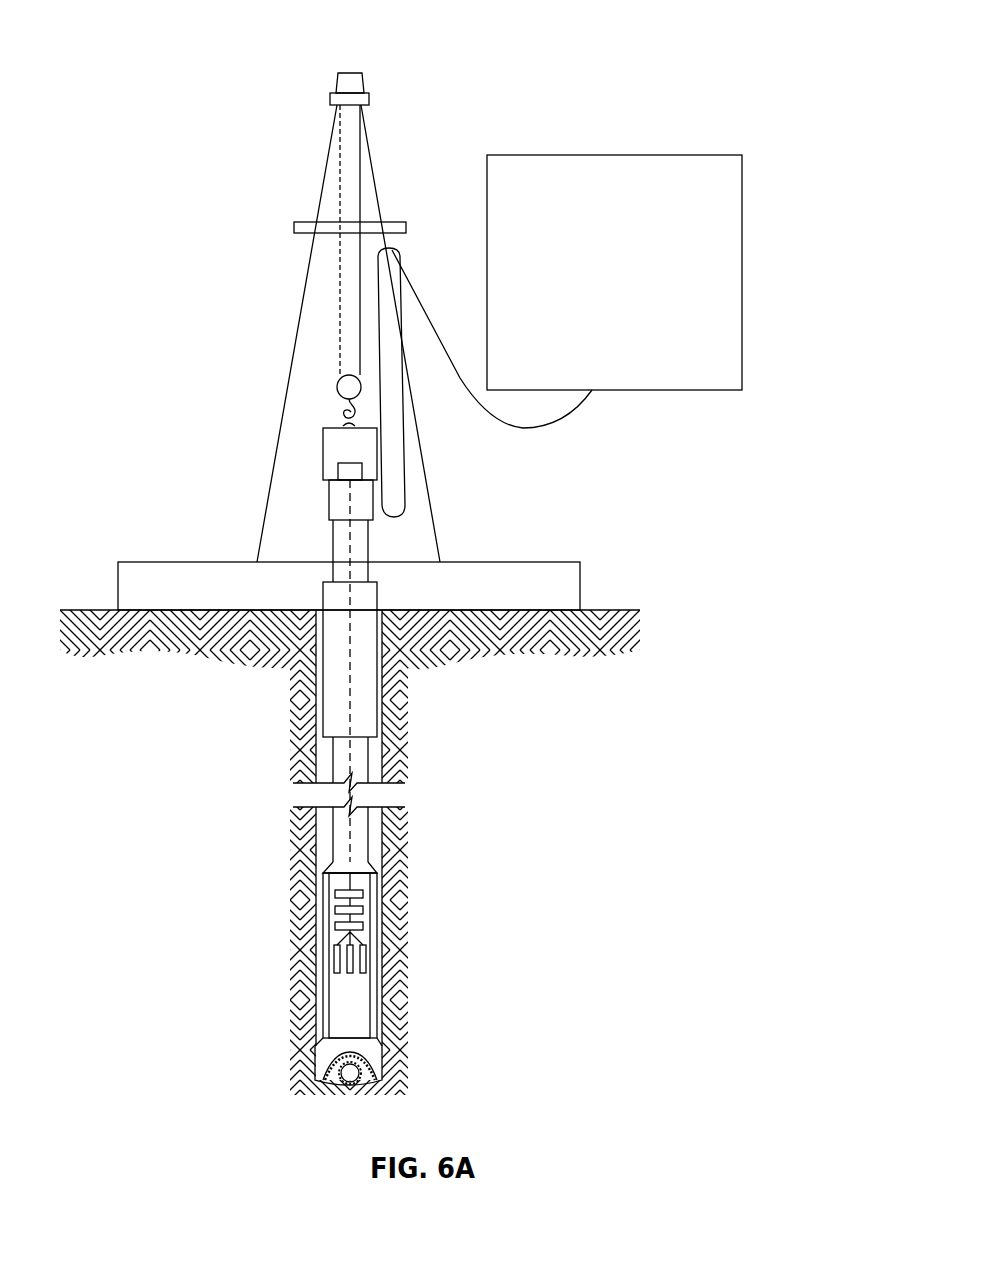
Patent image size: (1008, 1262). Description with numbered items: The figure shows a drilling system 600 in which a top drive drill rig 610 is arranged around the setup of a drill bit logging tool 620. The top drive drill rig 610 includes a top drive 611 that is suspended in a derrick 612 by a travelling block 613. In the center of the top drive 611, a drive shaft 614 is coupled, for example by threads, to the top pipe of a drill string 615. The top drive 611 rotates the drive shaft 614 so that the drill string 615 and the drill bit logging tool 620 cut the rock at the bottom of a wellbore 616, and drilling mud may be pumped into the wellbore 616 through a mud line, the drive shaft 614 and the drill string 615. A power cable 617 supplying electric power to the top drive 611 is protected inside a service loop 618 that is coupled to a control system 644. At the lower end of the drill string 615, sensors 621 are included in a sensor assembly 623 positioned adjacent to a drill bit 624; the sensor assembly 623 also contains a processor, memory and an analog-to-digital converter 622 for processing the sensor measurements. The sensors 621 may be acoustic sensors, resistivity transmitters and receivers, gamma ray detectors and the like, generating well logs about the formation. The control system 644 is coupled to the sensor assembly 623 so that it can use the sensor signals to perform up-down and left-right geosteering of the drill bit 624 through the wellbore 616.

The drilling system 600 is at (786, 55).
The top drive drill rig 610 is at (97, 75).
The top drive 611 is at (323, 443).
The derrick 612 is at (270, 490).
The travelling block 613 is at (337, 387).
The drive shaft 614 is at (329, 498).
The drill string 615 is at (333, 771).
The wellbore 616 is at (323, 737).
The power cable 617 is at (403, 445).
The service loop 618 is at (558, 425).
The drill bit logging tool 620 is at (187, 855).
The sensors 621 is at (333, 958).
The analog-to-digital converter 622 is at (363, 927).
The sensor assembly 623 is at (325, 896).
The drill bit 624 is at (325, 1075).
The control system 644 is at (680, 155).